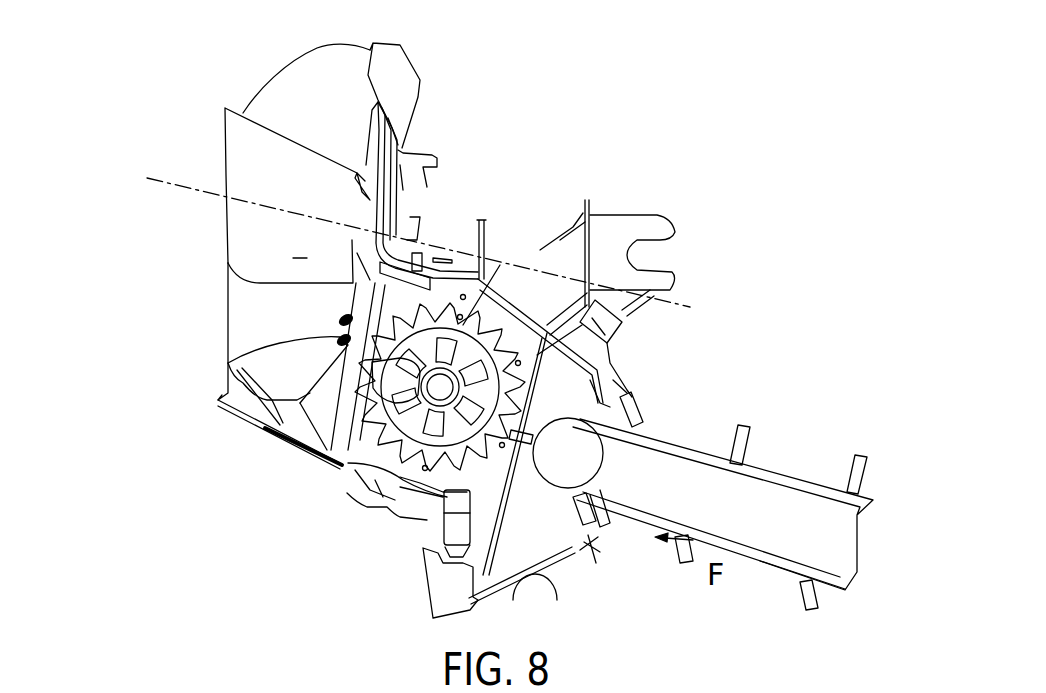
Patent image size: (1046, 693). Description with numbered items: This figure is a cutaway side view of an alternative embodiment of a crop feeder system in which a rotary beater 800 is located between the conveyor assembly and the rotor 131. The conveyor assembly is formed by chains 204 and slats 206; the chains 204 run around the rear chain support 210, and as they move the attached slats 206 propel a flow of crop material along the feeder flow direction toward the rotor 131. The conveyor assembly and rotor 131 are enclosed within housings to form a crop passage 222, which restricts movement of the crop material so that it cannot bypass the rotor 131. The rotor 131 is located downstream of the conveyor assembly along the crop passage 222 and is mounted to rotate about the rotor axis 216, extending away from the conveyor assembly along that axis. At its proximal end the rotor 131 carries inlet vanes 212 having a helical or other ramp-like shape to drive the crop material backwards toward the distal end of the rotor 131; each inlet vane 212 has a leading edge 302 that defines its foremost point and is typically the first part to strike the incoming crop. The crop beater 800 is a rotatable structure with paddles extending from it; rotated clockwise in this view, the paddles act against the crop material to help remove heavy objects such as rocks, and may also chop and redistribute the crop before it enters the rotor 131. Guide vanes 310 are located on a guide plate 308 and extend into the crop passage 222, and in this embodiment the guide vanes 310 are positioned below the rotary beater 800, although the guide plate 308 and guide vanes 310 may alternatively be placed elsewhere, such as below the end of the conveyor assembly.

The rotor 131 is at (237, 143).
The inlet vane 212 is at (322, 70).
The rotor axis 216 is at (173, 185).
The leading edge 302 is at (390, 173).
The rotary beater 800 is at (492, 283).
The crop passage 222 is at (368, 449).
The guide vanes 310 is at (382, 470).
The guide plate 308 is at (433, 500).
The rear chain support 210 is at (590, 452).
The chains 204 is at (870, 507).
The slats 206 is at (860, 468).